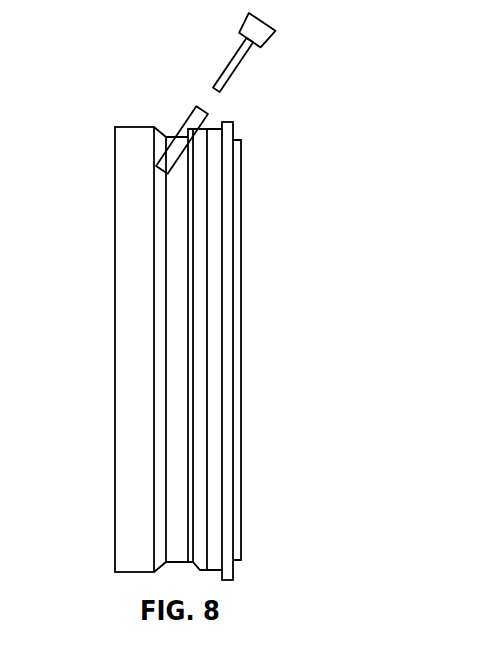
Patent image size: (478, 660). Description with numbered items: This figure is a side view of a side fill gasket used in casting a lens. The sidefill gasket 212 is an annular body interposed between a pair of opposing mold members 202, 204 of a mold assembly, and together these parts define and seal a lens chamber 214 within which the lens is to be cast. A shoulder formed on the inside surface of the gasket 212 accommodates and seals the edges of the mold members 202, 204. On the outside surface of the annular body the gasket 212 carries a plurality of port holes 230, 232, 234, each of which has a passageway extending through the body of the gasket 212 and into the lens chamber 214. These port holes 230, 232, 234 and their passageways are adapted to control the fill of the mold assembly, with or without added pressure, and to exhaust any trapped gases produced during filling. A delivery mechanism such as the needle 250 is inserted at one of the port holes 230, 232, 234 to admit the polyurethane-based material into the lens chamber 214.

The mold member 202 is at (168, 351).
The mold member 204 is at (213, 237).
The sidefill gasket 212 is at (113, 432).
The lens chamber 214 is at (158, 413).
The port hole 230 is at (283, 127).
The port hole 232 is at (182, 140).
The port hole 234 is at (206, 108).
The needle 250 is at (263, 36).